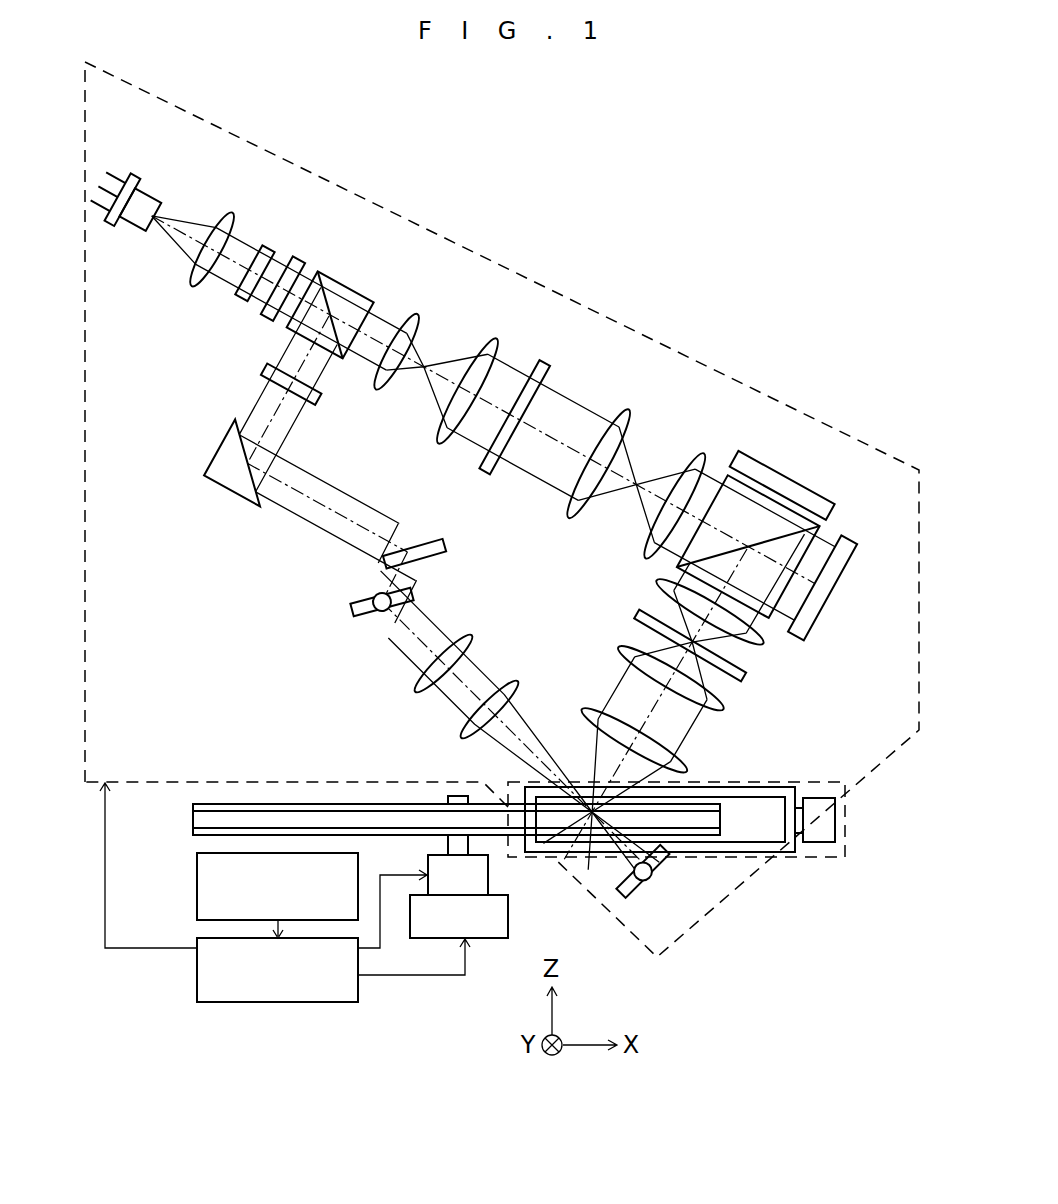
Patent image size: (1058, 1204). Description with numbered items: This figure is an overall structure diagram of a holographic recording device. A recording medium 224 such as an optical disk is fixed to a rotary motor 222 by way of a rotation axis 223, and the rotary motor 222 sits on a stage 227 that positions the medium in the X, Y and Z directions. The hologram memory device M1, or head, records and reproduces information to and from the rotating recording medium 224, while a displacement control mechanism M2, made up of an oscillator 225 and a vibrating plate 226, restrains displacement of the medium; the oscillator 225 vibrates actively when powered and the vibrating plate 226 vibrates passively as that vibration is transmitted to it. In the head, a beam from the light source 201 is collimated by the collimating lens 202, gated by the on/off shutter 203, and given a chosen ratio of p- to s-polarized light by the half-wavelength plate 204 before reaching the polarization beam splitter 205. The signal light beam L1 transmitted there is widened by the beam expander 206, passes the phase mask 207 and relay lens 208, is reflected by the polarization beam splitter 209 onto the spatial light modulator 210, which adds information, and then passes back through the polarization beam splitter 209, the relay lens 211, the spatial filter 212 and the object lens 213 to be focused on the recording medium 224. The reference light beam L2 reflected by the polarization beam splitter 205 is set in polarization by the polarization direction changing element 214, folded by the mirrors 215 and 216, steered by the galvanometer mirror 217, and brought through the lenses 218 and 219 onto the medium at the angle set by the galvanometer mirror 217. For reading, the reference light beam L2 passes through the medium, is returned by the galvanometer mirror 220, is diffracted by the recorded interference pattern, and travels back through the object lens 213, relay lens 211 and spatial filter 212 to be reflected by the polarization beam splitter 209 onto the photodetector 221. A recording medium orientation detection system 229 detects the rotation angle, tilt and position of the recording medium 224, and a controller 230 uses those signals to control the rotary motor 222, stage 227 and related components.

The light source 201 is at (154, 198).
The collimating lens 202 is at (228, 212).
The on/off shutter 203 is at (266, 246).
The half-wavelength plate 204 is at (297, 258).
The polarization beam splitter 205 is at (351, 289).
The beam expander 206 is at (439, 362).
The phase mask 207 is at (543, 362).
The relay lens 208 is at (641, 475).
The polarization beam splitter 209 is at (821, 528).
The spatial light modulator 210 is at (790, 481).
The relay lens 211 is at (677, 643).
The spatial filter 212 is at (746, 675).
The object lens 213 is at (690, 768).
The polarization direction changing element 214 is at (320, 401).
The mirror 215 is at (219, 448).
The mirror 216 is at (428, 548).
The galvanometer mirror 217 is at (373, 621).
The lens 218 is at (468, 634).
The lens 219 is at (511, 681).
The galvanometer mirror 220 is at (660, 867).
The photodetector 221 is at (830, 600).
The rotary motor 222 is at (489, 878).
The rotation axis 223 is at (447, 794).
The recording medium 224 is at (213, 803).
The oscillator 225 is at (838, 805).
The vibrating plate 226 is at (780, 850).
The stage 227 is at (509, 913).
The recording medium orientation detection system 229 is at (196, 892).
The controller 230 is at (196, 990).
The signal light beam L1 is at (389, 325).
The reference light beam L2 is at (300, 351).
The hologram memory device M1 is at (443, 235).
The displacement control mechanism M2 is at (848, 843).